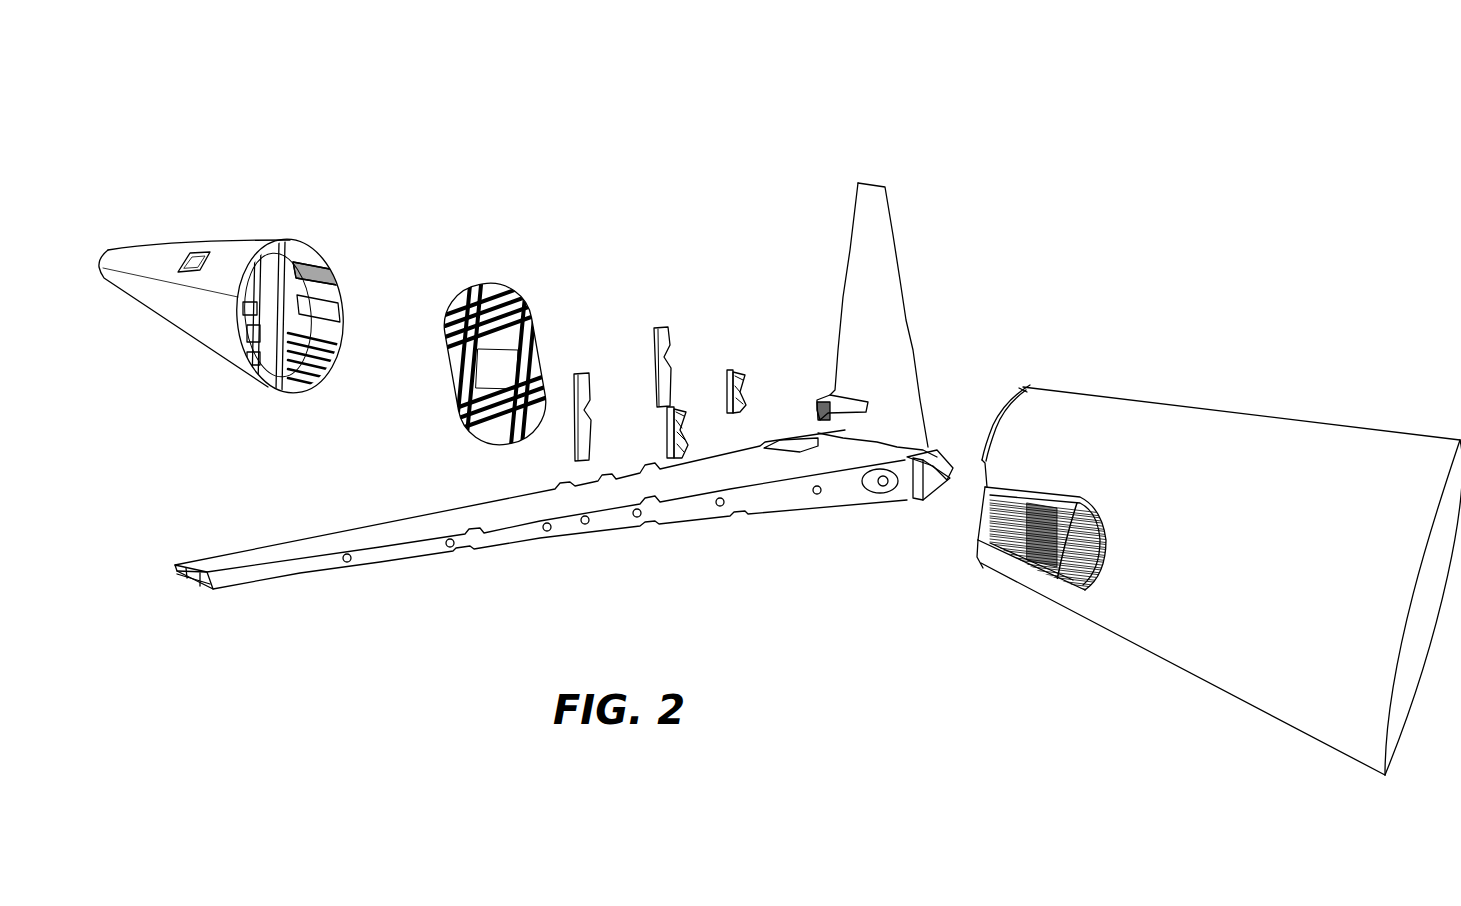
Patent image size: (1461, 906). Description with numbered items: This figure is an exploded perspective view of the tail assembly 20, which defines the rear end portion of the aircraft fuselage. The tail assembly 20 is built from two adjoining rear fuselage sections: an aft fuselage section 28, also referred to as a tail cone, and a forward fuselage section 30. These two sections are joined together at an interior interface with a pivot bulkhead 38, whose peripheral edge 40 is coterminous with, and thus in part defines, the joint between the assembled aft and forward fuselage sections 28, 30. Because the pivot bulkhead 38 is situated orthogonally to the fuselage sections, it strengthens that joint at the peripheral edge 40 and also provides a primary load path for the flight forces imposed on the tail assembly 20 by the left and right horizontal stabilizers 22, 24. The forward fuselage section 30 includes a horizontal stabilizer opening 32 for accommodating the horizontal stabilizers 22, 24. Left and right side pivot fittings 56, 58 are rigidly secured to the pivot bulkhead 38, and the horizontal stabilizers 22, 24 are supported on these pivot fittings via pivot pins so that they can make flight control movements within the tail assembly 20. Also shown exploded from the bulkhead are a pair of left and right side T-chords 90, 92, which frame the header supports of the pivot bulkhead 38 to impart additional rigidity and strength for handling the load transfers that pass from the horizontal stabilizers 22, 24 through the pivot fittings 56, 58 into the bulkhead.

The tail assembly 20 is at (785, 186).
The left horizontal stabilizer 22 is at (893, 307).
The right horizontal stabilizer 24 is at (372, 540).
The aft fuselage section 28 is at (166, 327).
The forward fuselage section 30 is at (1213, 660).
The horizontal stabilizer opening 32 is at (993, 532).
The pivot bulkhead 38 is at (533, 277).
The peripheral edge 40 is at (540, 333).
The left side pivot fitting 56 is at (742, 380).
The right side pivot fitting 58 is at (667, 433).
The left side T-chord 90 is at (670, 337).
The right side T-chord 92 is at (589, 390).